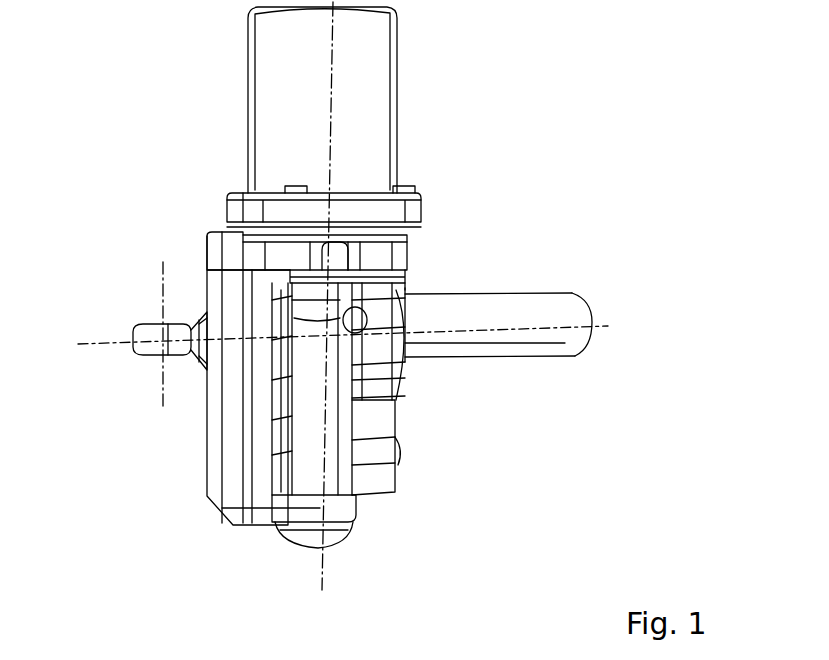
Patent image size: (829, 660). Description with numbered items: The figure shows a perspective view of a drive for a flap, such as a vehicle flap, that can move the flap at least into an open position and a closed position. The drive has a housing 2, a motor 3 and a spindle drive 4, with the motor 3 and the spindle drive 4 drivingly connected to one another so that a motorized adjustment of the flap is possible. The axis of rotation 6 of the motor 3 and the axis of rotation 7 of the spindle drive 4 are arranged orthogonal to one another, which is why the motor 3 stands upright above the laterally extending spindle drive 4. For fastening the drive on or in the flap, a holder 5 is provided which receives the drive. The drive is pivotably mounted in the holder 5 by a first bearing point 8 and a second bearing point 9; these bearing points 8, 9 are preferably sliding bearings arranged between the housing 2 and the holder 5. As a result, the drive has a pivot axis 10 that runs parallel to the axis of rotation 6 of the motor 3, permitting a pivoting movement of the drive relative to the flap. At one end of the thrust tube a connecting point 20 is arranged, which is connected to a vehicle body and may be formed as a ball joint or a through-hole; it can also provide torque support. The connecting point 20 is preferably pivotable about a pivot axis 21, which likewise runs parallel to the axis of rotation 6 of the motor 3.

The housing 2 is at (398, 433).
The motor 3 is at (267, 125).
The spindle drive 4 is at (488, 359).
The holder 5 is at (210, 426).
The axis of rotation of the motor 6 is at (418, 296).
The axis of rotation of the spindle drive 7 is at (605, 325).
The first bearing point 8 is at (417, 247).
The second bearing point 9 is at (367, 512).
The pivot axis 10 is at (333, 20).
The connecting point 20 is at (137, 327).
The pivot axis of the connecting point 21 is at (163, 262).